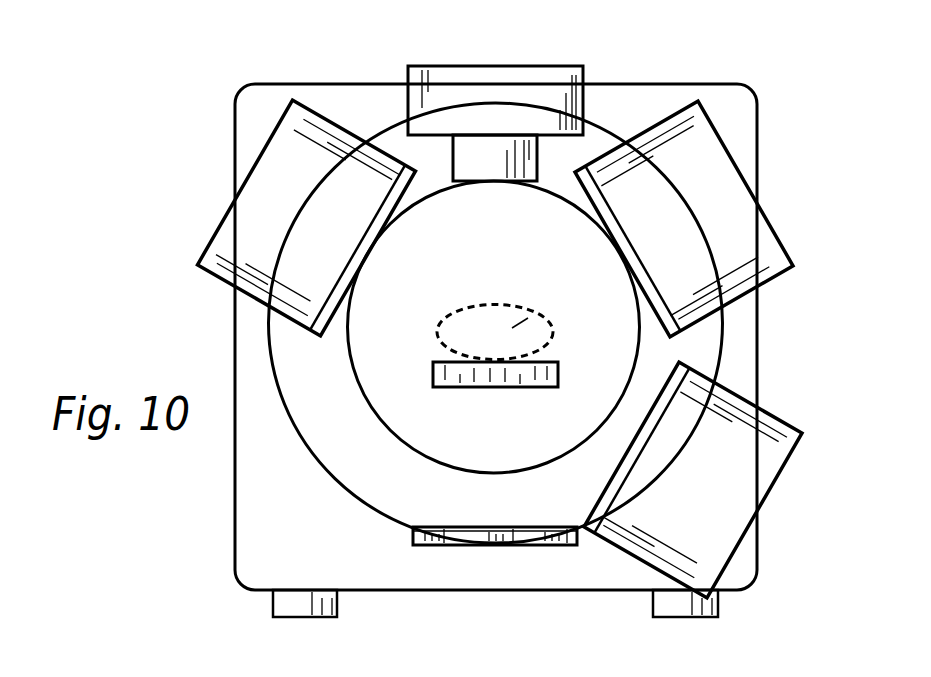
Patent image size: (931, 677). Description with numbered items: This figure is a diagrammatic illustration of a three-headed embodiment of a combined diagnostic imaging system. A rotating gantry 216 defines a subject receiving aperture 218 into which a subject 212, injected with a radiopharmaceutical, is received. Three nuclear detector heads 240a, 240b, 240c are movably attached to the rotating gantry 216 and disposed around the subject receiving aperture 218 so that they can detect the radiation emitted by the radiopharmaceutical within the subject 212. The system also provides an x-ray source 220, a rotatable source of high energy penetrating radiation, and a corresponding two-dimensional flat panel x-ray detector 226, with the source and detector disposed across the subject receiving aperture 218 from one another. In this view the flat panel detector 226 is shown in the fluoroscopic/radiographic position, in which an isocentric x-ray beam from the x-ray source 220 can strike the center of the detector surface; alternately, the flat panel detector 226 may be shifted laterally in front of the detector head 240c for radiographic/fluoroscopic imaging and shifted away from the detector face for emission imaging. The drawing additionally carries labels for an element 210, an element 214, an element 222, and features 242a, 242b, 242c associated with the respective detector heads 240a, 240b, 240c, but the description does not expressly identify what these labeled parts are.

The photodetector bar 210 is at (499, 388).
The subject 212 is at (500, 305).
The housing 214 is at (251, 544).
The rotating gantry 216 is at (327, 446).
The subject receiving aperture 218 is at (522, 324).
The x-ray source 220 is at (505, 75).
The light source output 222 is at (489, 174).
The two-dimensional flat panel x-ray detector 226 is at (486, 545).
The nuclear detector head 240a is at (228, 230).
The nuclear detector head 240b is at (765, 233).
The nuclear detector head 240c is at (767, 426).
The first camera lens 242a is at (352, 256).
The second camera lens 242b is at (637, 256).
The third camera lens 242c is at (593, 480).